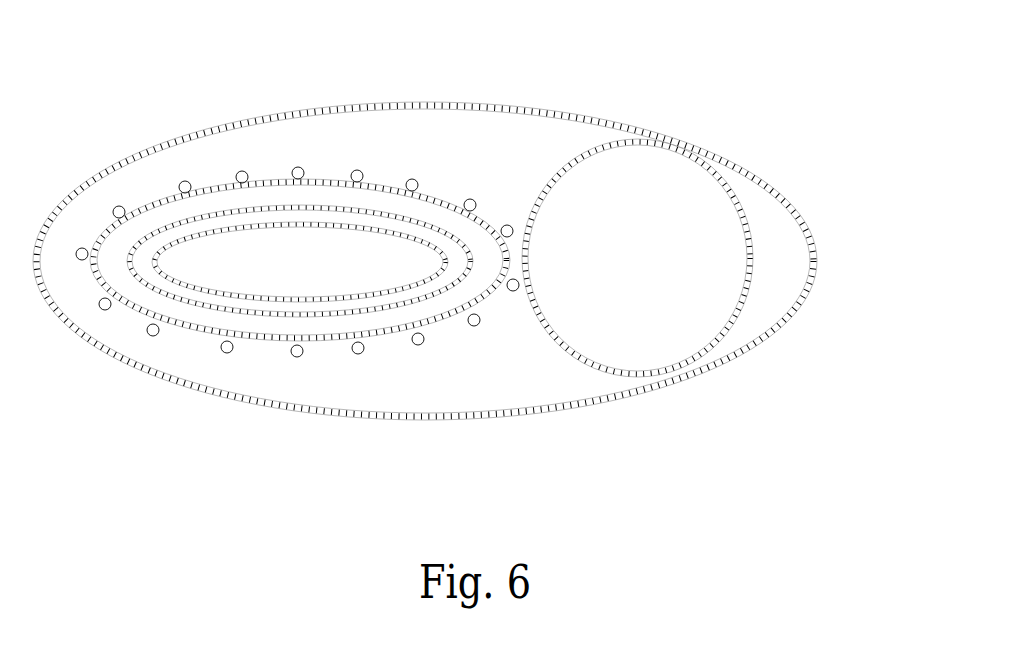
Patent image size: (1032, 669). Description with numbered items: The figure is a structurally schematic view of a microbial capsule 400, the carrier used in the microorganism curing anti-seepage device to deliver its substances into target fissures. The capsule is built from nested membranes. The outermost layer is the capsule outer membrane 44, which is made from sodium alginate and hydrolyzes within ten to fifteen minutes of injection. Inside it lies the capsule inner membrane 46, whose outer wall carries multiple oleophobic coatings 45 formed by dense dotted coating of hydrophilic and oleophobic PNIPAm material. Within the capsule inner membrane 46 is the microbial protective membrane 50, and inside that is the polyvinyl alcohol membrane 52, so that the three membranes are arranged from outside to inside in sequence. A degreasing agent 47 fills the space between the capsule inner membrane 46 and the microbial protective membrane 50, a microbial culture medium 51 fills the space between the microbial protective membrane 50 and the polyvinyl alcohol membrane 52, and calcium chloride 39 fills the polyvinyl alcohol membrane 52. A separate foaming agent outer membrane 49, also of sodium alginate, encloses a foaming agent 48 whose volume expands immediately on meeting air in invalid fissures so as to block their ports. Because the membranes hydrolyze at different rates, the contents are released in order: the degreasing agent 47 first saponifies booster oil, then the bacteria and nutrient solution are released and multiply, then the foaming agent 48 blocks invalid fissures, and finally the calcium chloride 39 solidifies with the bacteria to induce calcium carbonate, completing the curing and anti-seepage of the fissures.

The calcium chloride 39 is at (277, 270).
The capsule outer membrane 44 is at (340, 103).
The oleophobic coating 45 is at (362, 172).
The capsule inner membrane 46 is at (420, 193).
The degreasing agent 47 is at (440, 218).
The foaming agent 48 is at (648, 217).
The foaming agent outer membrane 49 is at (757, 251).
The microbial protective membrane 50 is at (443, 295).
The microbial culture medium 51 is at (388, 300).
The polyvinyl alcohol membrane 52 is at (320, 302).
The microbial capsule 400 is at (620, 415).